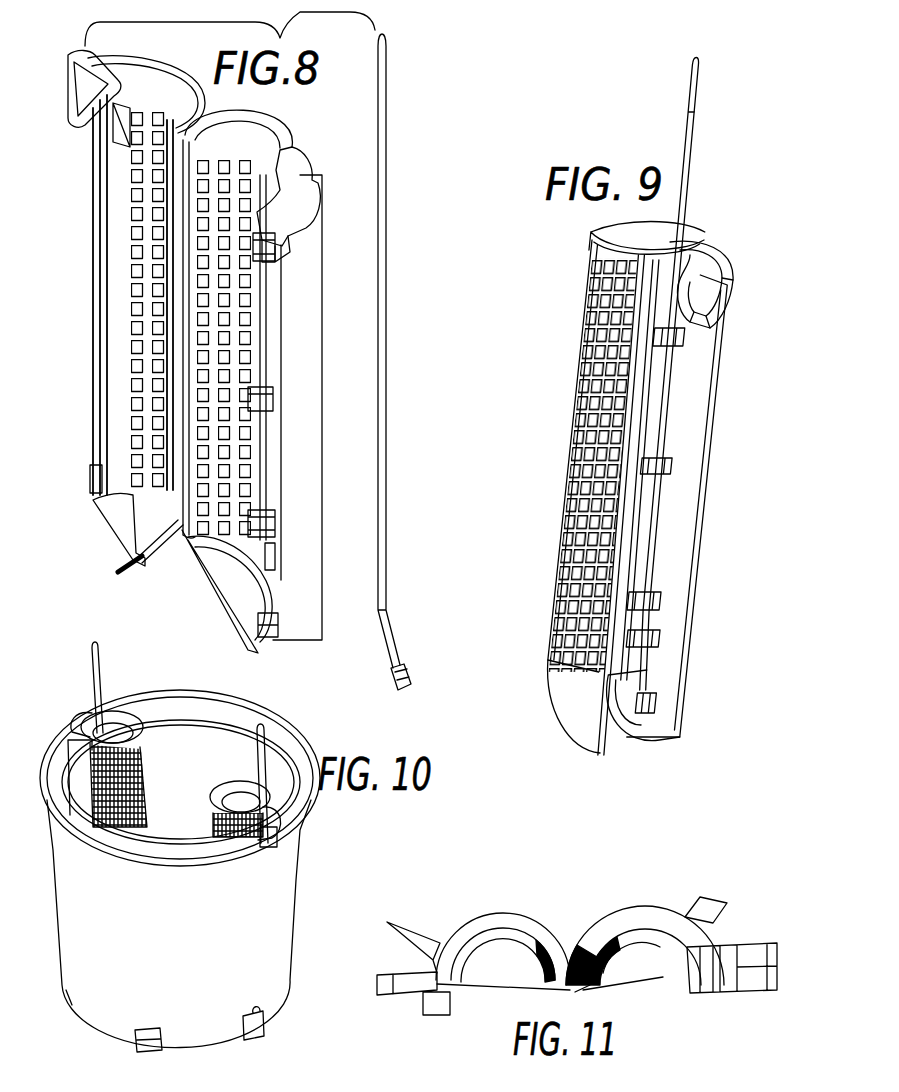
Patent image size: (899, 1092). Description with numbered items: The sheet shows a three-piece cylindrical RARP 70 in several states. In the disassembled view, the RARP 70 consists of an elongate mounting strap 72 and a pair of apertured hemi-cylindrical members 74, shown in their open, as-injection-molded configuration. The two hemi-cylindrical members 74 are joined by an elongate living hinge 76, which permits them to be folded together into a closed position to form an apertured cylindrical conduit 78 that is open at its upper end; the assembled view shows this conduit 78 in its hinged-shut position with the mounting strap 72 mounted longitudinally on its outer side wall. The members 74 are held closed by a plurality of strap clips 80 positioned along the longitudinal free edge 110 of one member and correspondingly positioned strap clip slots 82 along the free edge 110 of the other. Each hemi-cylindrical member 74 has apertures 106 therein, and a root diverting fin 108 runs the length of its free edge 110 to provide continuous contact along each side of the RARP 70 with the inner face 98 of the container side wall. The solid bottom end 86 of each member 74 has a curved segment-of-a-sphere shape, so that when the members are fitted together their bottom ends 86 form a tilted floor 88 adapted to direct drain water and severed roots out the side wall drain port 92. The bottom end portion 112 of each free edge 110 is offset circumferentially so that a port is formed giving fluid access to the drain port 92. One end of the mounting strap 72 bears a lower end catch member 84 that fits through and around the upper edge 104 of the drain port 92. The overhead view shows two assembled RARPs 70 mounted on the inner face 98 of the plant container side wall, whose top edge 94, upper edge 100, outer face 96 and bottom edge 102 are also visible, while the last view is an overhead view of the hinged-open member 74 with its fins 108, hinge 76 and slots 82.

In FIG. 8, the cylindrical RARP 70 is at (288, 134).
In FIG. 9, the cylindrical RARP 70 is at (705, 226).
In FIG. 10, the cylindrical RARP 70 is at (148, 712).
In FIG. 11, the cylindrical RARP 70 is at (523, 910).
In FIG. 8, the elongate mounting strap 72 is at (397, 216).
In FIG. 9, the elongate mounting strap 72 is at (692, 150).
In FIG. 10, the elongate mounting strap 72 is at (262, 732).
In FIG. 8, the apertured hemi-cylindrical member 74 is at (126, 367).
In FIG. 8, the living hinge 76 is at (182, 533).
In FIG. 11, the living hinge 76 is at (585, 990).
In FIG. 9, the apertured cylindrical conduit 78 is at (578, 470).
In FIG. 9, the strap clips 80 is at (656, 336).
In FIG. 8, the strap clip slots 82 is at (265, 385).
In FIG. 11, the strap clip slots 82 is at (713, 1000).
In FIG. 8, the lower end catch member 84 is at (416, 680).
In FIG. 9, the lower end catch member 84 is at (662, 700).
In FIG. 8, the hemi-cylindrical member solid bottom 86 is at (225, 580).
In FIG. 9, the cylindrical conduit tilted floor 88 is at (617, 717).
In FIG. 10, the side wall drain port 92 is at (165, 1042).
In FIG. 10, the side wall top edge 94 is at (73, 817).
In FIG. 10, the plant container outer face 96 is at (278, 895).
In FIG. 10, the plant container inner face 98 is at (180, 815).
In FIG. 10, the plant container upper edge 100 is at (298, 804).
In FIG. 10, the plant container bottom edge 102 is at (100, 1033).
In FIG. 10, the drain port upper edge 104 is at (152, 1030).
In FIG. 8, the hemi-cylindrical member apertures 106 is at (135, 255).
In FIG. 8, the root diverting fin 108 is at (310, 500).
In FIG. 9, the root diverting fin 108 is at (682, 545).
In FIG. 11, the root diverting fin 108 is at (420, 935).
In FIG. 8, the hemi-cylindrical member free edge 110 is at (96, 480).
In FIG. 8, the free edge bottom portion 112 is at (118, 575).